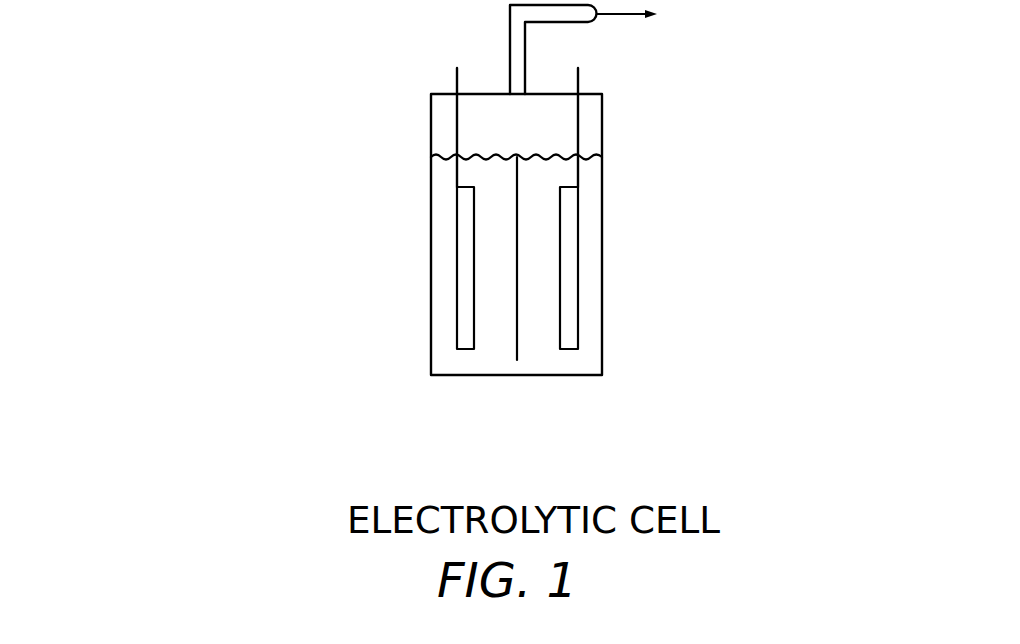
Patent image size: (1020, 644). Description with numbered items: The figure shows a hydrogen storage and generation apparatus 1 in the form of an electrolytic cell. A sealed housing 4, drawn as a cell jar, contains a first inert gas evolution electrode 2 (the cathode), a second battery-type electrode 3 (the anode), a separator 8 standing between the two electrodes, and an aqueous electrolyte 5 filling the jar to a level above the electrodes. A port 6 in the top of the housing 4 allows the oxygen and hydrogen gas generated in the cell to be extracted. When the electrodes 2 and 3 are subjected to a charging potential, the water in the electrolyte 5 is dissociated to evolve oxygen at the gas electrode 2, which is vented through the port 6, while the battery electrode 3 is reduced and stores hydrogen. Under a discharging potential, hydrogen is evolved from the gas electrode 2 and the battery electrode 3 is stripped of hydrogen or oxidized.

The hydrogen storage and generation apparatus 1 is at (662, 43).
The gas evolution electrode 2 is at (572, 213).
The battery electrode 3 is at (463, 262).
The sealed housing 4 is at (604, 326).
The aqueous electrolyte 5 is at (437, 163).
The port 6 is at (516, 52).
The separator 8 is at (518, 347).